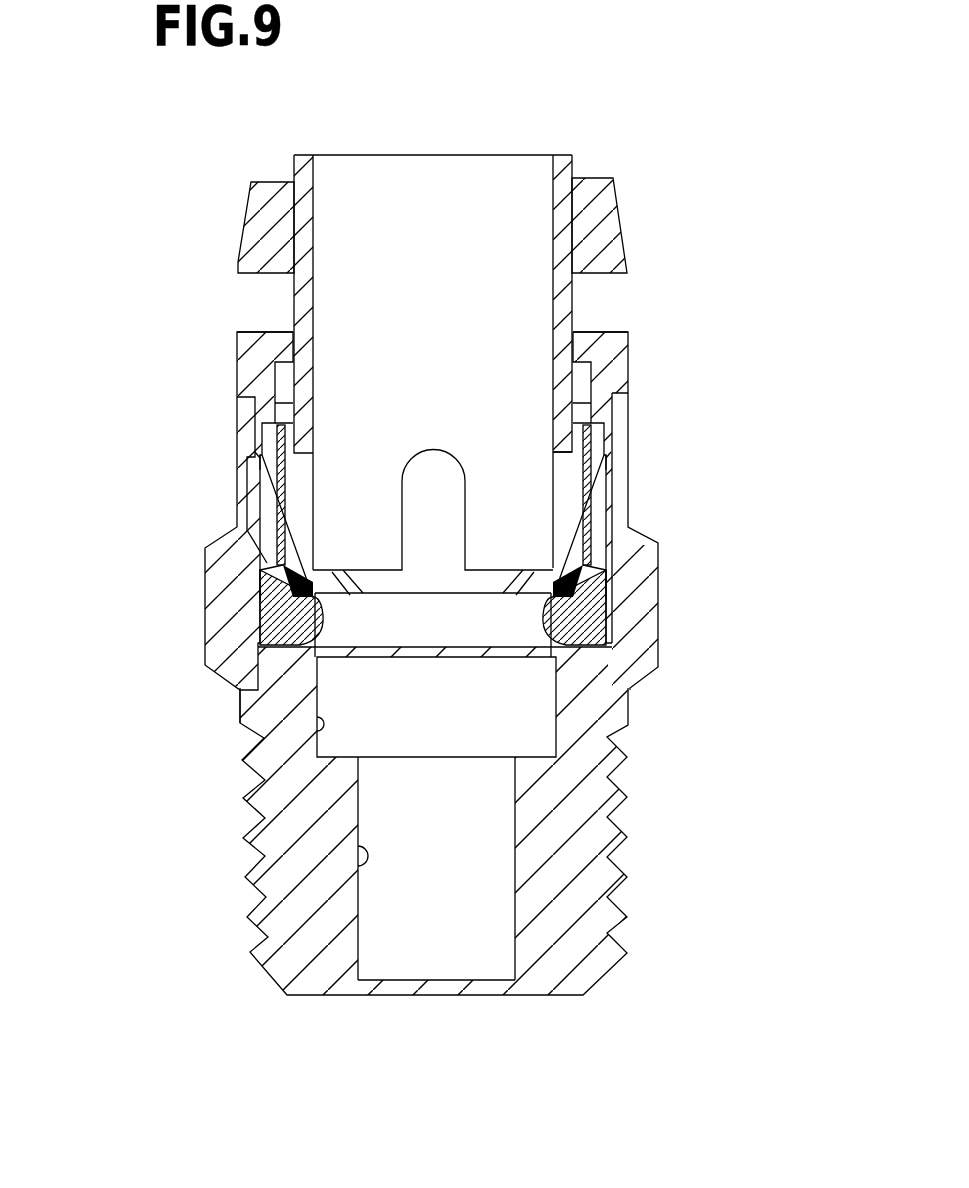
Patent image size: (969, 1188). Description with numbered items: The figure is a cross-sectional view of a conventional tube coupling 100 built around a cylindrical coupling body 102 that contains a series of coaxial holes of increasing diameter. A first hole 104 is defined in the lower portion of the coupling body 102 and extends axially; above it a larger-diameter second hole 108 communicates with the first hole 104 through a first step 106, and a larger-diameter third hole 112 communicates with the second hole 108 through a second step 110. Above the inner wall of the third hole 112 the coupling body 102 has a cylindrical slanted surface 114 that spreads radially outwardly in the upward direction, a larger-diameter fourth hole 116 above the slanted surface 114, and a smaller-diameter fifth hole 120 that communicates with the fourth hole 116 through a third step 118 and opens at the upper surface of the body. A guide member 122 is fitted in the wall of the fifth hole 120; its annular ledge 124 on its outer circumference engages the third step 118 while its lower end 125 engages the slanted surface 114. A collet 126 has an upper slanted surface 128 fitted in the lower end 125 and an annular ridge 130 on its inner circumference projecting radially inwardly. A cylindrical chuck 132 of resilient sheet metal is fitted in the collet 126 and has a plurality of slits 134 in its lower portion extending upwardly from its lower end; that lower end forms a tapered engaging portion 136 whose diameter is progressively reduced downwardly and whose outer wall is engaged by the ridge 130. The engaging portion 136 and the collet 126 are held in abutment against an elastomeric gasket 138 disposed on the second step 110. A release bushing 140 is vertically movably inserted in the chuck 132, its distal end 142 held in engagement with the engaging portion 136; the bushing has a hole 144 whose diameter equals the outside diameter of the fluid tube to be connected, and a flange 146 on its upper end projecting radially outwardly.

The tube coupling 100 is at (633, 115).
The coupling body 102 is at (242, 917).
The first hole 104 is at (358, 855).
The first step 106 is at (345, 793).
The second hole 108 is at (318, 720).
The second step 110 is at (240, 692).
The third hole 112 is at (266, 615).
The slanted surface 114 is at (262, 570).
The fourth hole 116 is at (245, 500).
The third step 118 is at (240, 432).
The fifth hole 120 is at (265, 395).
The guide member 122 is at (238, 328).
The annular ledge 124 is at (238, 467).
The lower end 125 is at (252, 523).
The collet 126 is at (610, 550).
The upper slanted surface 128 is at (615, 537).
The annular ridge 130 is at (622, 570).
The chuck 132 is at (607, 423).
The slits 134 is at (362, 597).
The engaging portion 136 is at (283, 651).
The gasket 138 is at (617, 625).
The release bushing 140 is at (417, 148).
The distal end 142 is at (567, 483).
The hole 144 is at (518, 187).
The flange 146 is at (622, 218).